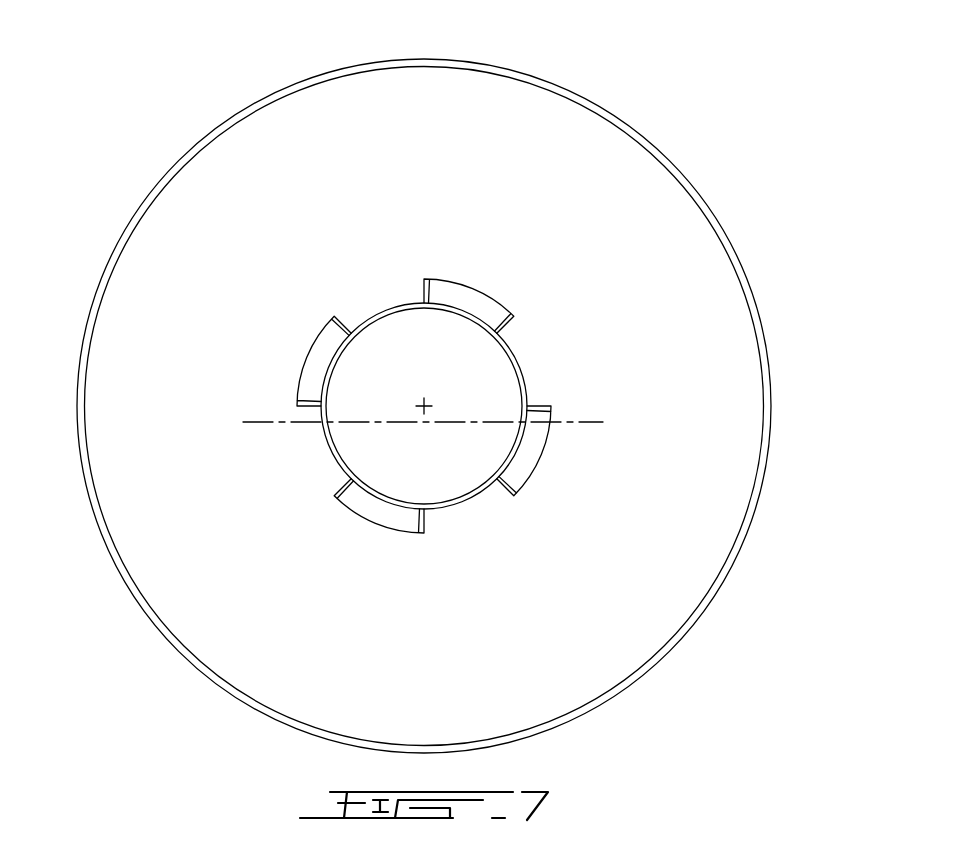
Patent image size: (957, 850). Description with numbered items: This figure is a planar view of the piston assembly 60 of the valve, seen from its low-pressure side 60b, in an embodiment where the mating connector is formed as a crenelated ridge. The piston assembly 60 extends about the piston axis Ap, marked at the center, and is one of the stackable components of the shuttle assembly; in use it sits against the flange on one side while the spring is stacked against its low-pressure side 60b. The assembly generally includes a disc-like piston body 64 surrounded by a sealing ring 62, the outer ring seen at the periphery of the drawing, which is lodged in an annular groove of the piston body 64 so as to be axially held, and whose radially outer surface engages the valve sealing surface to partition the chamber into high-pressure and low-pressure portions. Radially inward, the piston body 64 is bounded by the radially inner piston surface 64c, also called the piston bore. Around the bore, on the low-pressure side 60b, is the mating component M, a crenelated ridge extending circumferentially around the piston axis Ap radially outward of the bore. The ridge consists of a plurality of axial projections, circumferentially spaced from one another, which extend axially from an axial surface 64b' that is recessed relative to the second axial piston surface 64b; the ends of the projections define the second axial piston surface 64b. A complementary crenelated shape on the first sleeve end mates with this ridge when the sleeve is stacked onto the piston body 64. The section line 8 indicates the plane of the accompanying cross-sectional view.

The piston assembly 60 is at (105, 100).
The low-pressure side 60b is at (665, 538).
The sealing ring 62 is at (752, 293).
The piston body 64 is at (770, 403).
The second axial piston surface 64b is at (469, 271).
The axial surface 64b' is at (669, 182).
The radially inner piston surface 64c is at (385, 492).
The mating connector M is at (298, 312).
The piston axis Ap is at (426, 401).
The section line 8- 8 is at (252, 392).